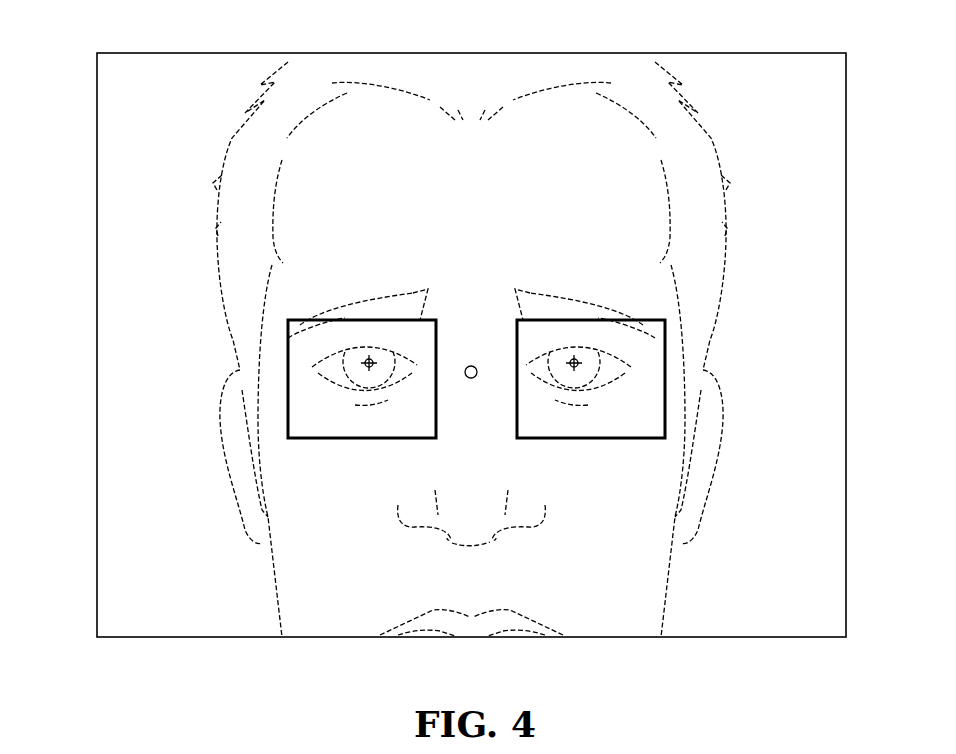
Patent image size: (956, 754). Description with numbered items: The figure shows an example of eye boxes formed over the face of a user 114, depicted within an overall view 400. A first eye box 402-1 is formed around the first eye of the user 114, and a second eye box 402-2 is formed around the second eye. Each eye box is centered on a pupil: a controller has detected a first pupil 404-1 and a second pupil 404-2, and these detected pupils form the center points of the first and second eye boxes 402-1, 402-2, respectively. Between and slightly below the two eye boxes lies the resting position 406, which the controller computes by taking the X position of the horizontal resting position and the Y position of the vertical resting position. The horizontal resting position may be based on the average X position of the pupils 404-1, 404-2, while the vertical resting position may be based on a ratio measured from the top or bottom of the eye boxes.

The image of user captured by camera 400 is at (142, 53).
The user 114 is at (220, 113).
The first eye box 402-1 is at (290, 320).
The second eye box 402-2 is at (637, 318).
The first pupil 404-1 is at (371, 361).
The second pupil 404-2 is at (578, 361).
The resting position 406 is at (473, 378).